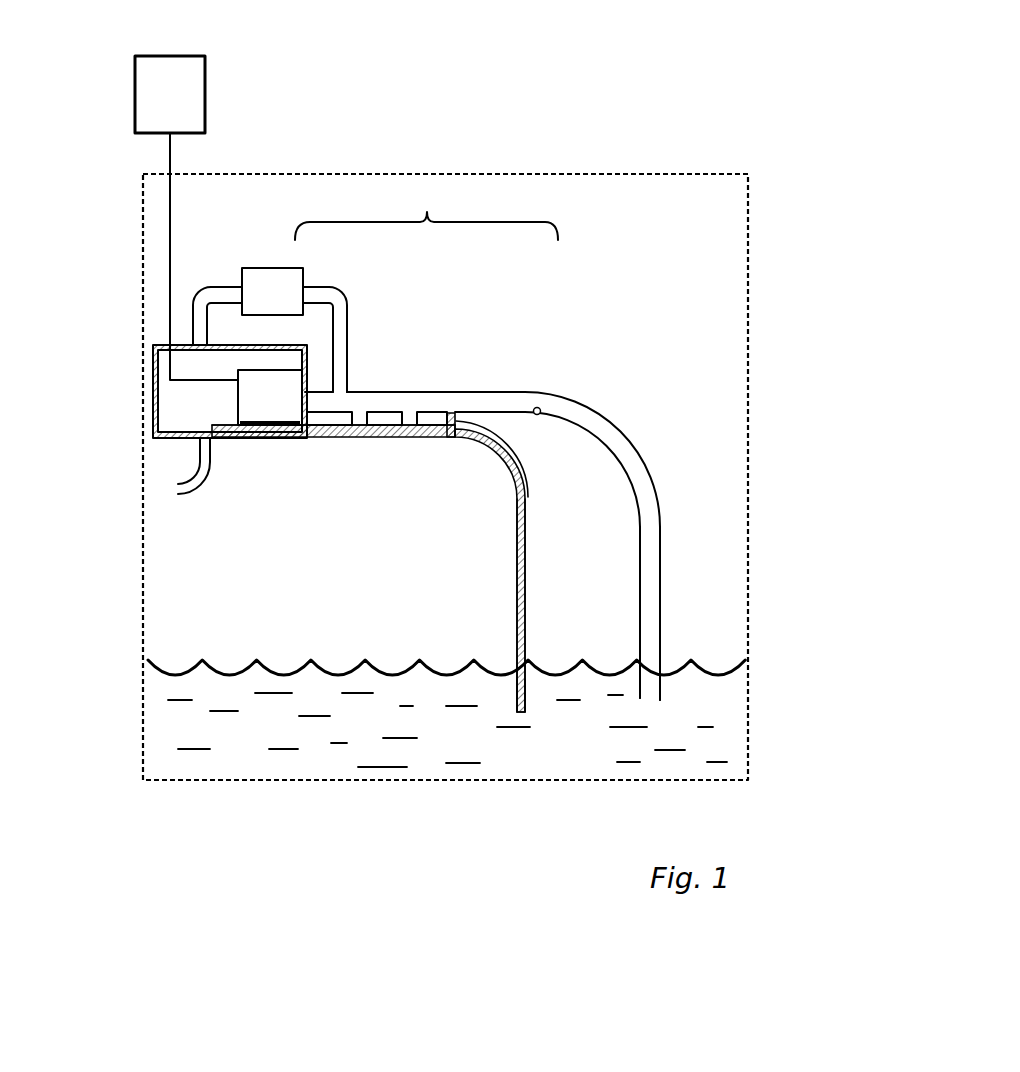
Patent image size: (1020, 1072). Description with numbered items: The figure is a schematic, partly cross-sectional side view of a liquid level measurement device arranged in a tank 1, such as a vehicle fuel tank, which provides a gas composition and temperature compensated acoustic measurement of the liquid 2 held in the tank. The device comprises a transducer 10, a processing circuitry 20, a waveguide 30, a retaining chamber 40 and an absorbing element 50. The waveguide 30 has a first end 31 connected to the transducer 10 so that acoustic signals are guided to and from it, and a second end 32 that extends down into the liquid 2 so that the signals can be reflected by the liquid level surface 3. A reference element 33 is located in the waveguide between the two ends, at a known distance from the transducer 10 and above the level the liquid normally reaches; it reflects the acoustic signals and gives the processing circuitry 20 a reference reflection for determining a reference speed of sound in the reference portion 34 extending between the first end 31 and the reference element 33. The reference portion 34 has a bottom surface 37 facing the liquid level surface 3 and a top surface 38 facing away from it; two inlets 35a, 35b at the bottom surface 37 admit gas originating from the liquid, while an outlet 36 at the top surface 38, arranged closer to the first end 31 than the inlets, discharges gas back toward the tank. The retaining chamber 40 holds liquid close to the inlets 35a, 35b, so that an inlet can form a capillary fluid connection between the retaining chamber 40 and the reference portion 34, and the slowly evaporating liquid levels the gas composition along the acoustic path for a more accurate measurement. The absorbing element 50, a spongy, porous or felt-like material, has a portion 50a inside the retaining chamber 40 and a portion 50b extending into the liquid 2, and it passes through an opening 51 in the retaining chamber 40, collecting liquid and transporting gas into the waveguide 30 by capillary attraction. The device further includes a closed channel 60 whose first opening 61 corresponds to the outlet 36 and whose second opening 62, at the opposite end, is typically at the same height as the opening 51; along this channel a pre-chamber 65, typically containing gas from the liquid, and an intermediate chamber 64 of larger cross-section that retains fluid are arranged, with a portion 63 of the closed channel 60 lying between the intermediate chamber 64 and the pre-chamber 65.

The tank 1 is at (597, 173).
The liquid 2 is at (580, 762).
The liquid level surface 3 is at (294, 667).
The transducer 10 is at (264, 430).
The processing circuitry 20 is at (192, 97).
The waveguide 30 is at (662, 468).
The first end 31 is at (302, 432).
The second end 32 is at (657, 682).
The reference element 33 is at (540, 416).
The reference portion 34 is at (375, 285).
The inlet 35a is at (358, 413).
The inlet 35b is at (412, 410).
The outlet 36 is at (340, 380).
The bottom surface 37 is at (500, 417).
The top surface 38 is at (480, 391).
The retaining chamber 40 is at (325, 445).
The absorbing element 50 is at (517, 562).
The portion of absorbing element 50a is at (402, 440).
The portion of absorbing element 50b is at (526, 699).
The opening 51 is at (512, 500).
The closed channel 60 is at (325, 312).
The first opening 61 is at (380, 333).
The second opening 62 is at (190, 495).
The portion of closed channel 63 is at (200, 338).
The intermediate chamber 64 is at (283, 307).
The pre-chamber 65 is at (212, 416).